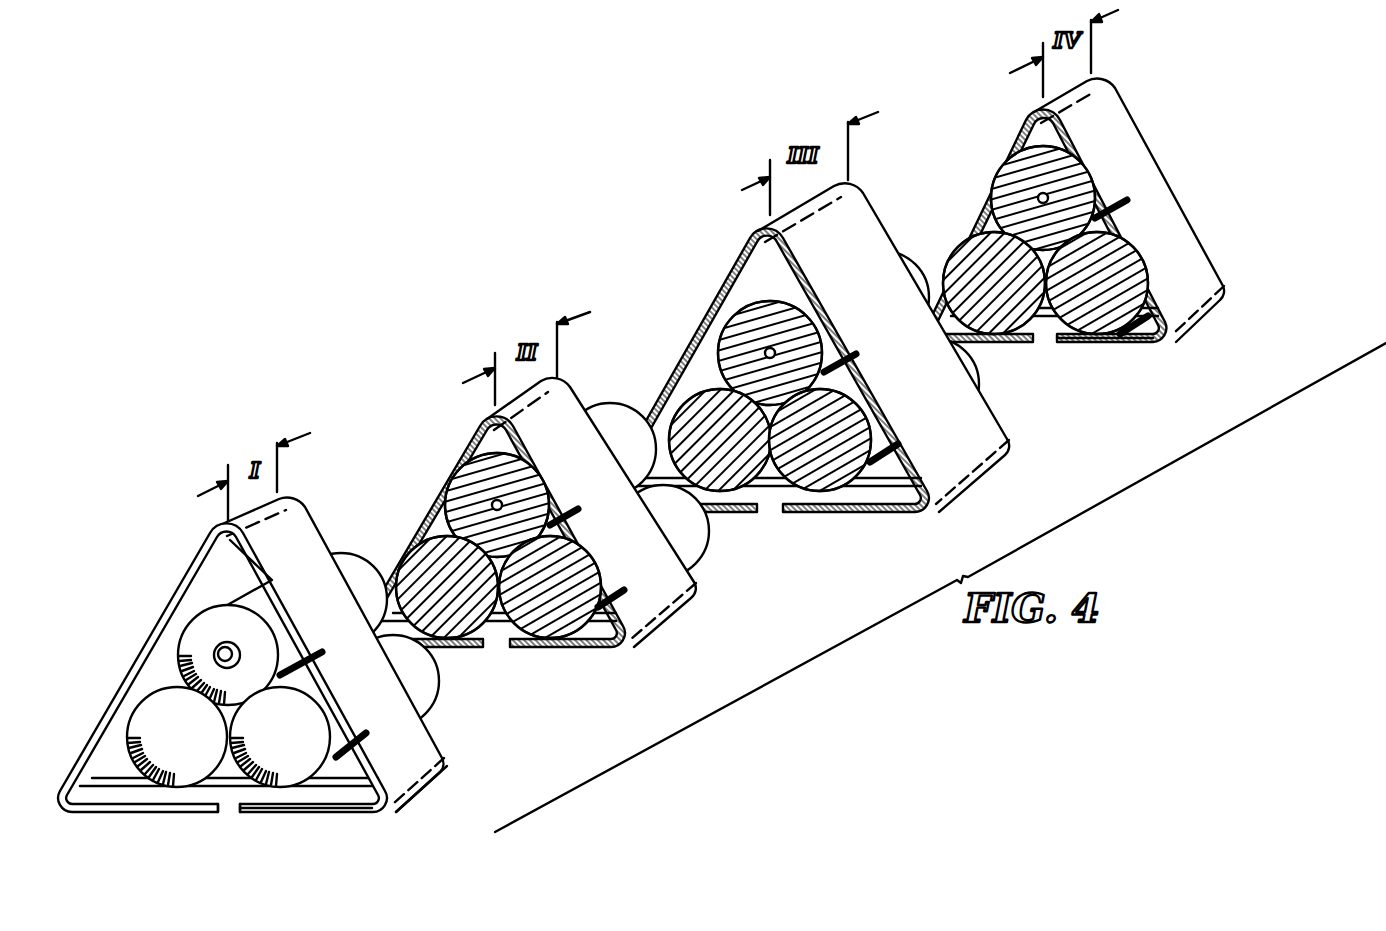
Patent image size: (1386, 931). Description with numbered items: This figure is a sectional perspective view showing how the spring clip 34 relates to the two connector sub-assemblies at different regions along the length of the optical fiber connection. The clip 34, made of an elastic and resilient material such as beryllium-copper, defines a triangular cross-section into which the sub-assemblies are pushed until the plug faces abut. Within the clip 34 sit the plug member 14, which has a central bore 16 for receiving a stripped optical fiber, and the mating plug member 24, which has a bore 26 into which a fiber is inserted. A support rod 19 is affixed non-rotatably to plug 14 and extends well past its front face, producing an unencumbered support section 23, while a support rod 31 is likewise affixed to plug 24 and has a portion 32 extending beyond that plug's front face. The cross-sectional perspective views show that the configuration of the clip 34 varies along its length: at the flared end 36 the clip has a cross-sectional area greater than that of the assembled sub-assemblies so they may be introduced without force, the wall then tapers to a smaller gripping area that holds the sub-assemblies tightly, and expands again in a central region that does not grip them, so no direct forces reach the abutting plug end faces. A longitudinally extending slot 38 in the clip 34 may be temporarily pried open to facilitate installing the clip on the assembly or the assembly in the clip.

The plug member 14 is at (1015, 165).
The central bore 16 is at (1038, 198).
The support rod 19 is at (962, 262).
The unencumbered support section 23 is at (133, 712).
The plug member 24 is at (196, 618).
The bore 26 is at (216, 652).
The support rod 31 is at (297, 780).
The portion 32 is at (1087, 328).
The spring clip 34 is at (418, 788).
The flared end 36 is at (352, 818).
The longitudinally extending slot 38 is at (221, 816).